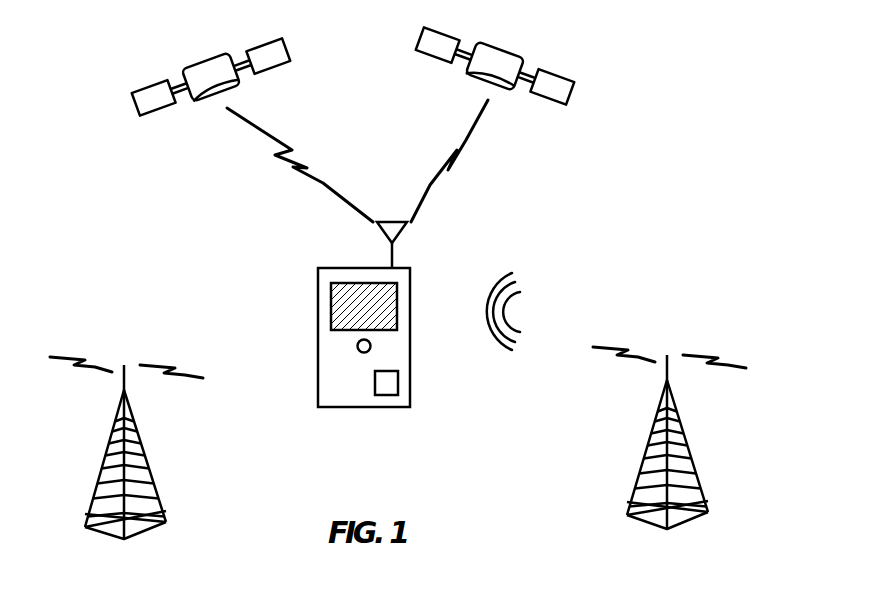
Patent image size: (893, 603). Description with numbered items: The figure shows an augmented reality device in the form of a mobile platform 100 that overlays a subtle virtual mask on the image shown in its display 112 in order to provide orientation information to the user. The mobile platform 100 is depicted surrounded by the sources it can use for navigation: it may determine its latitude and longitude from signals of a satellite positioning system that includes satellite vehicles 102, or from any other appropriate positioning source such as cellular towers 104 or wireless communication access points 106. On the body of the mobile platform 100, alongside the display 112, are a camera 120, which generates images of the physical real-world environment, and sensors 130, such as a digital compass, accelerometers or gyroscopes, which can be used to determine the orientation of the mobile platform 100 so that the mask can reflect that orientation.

The mobile platform 100 is at (350, 407).
The satellite vehicles 102 is at (500, 43).
The cellular towers 104 is at (683, 430).
The wireless communication access points 106 is at (509, 312).
The display 112 is at (331, 296).
The camera 120 is at (357, 346).
The sensors 130 is at (399, 382).